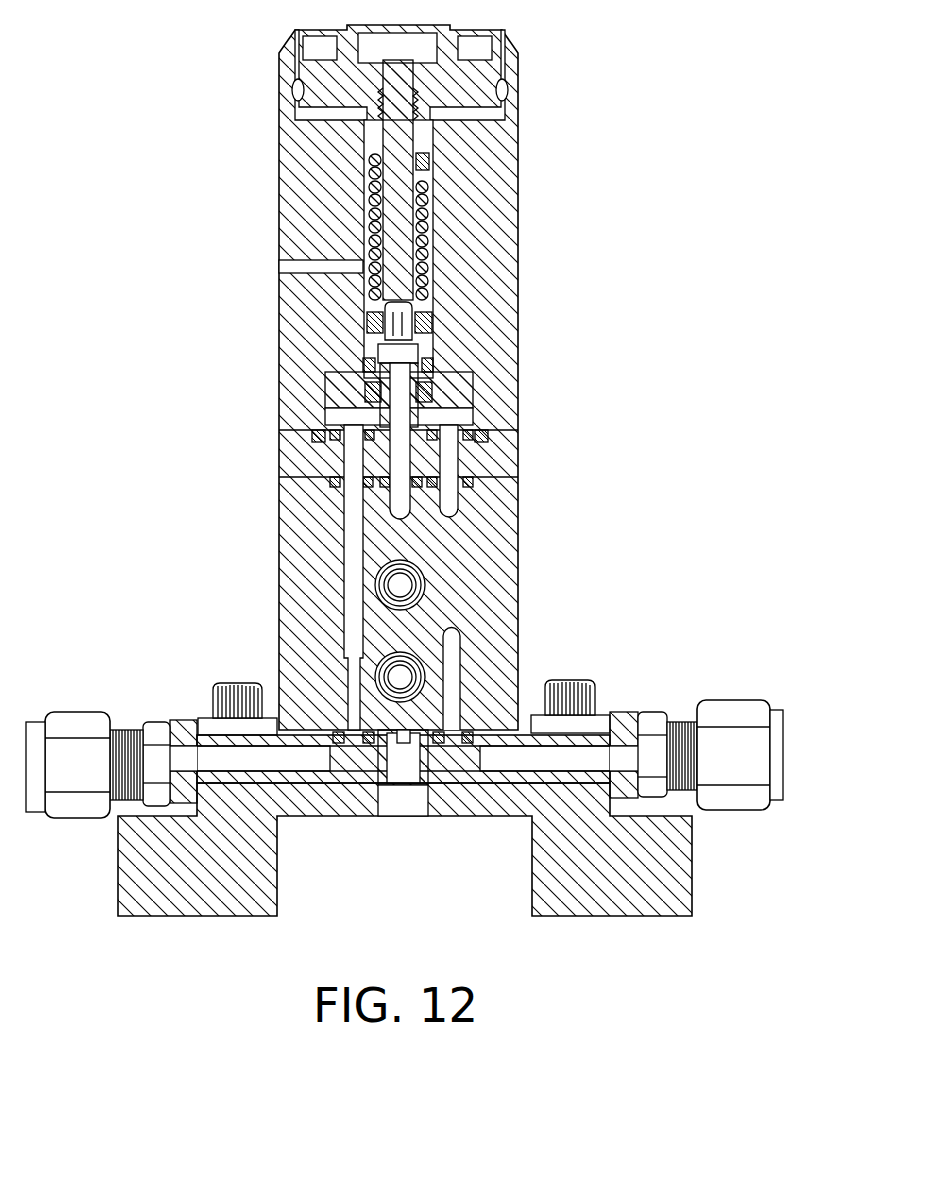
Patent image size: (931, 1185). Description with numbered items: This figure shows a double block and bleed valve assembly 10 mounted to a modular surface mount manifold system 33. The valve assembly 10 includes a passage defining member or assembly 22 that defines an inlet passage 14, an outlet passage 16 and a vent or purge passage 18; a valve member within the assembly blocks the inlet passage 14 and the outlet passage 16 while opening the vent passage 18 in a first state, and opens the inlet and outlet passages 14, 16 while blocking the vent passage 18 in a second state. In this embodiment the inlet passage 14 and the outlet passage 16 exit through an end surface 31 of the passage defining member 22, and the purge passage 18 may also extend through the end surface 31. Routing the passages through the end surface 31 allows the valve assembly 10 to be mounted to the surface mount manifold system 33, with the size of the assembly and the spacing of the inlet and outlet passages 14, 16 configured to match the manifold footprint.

The valve assembly 10 is at (614, 167).
The inlet passage 14 is at (350, 678).
The outlet passage 16 is at (456, 654).
The vent passage 18 is at (397, 493).
The passage defining member 22 is at (524, 485).
The end surface 31 is at (296, 738).
The surface mount manifold system 33 is at (624, 652).